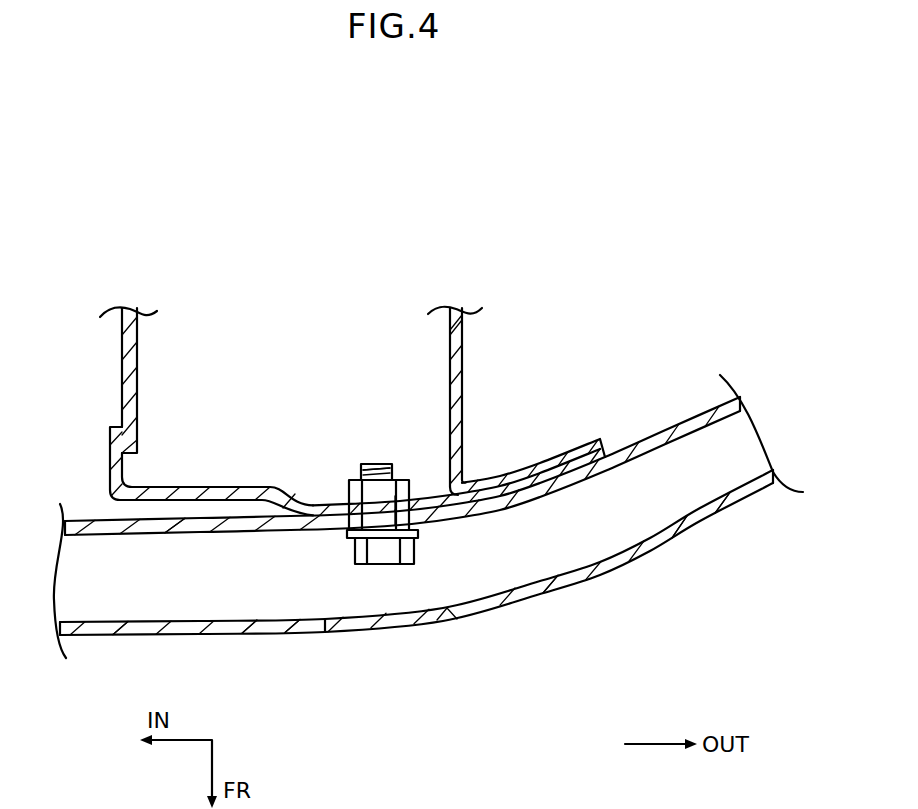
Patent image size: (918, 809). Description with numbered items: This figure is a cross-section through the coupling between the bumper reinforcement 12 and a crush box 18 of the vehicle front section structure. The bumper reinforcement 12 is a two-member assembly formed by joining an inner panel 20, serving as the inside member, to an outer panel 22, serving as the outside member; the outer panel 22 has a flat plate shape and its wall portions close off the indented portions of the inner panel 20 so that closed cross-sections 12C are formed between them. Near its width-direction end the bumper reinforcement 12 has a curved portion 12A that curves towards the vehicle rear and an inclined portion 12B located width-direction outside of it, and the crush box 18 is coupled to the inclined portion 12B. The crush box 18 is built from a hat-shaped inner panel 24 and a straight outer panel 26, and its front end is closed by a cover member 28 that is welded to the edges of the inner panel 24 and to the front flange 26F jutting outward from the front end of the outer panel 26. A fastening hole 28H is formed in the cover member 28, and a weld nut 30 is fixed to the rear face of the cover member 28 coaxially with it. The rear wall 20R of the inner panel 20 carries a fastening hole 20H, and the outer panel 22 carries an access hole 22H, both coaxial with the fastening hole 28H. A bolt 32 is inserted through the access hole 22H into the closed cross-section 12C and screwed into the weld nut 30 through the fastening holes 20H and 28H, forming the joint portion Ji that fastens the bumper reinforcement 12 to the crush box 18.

The bumper reinforcement 12 is at (265, 641).
The curved portion 12A is at (315, 628).
The inclined portion 12B is at (705, 520).
The closed cross-section 12C is at (582, 544).
The crush box 18 is at (463, 365).
The inner panel 20 is at (157, 535).
The fastening hole 20H is at (352, 540).
The rear wall 20R is at (228, 532).
The outer panel 22 is at (217, 636).
The access hole 22H is at (437, 621).
The inner panel 24 is at (138, 343).
The outer panel 26 is at (462, 407).
The front flange 26F is at (592, 438).
The cover member 28 is at (220, 487).
The fastening hole 28H is at (362, 503).
The weld nut 30 is at (403, 483).
The bolt 32 is at (414, 546).
The joint portion Ji is at (371, 441).